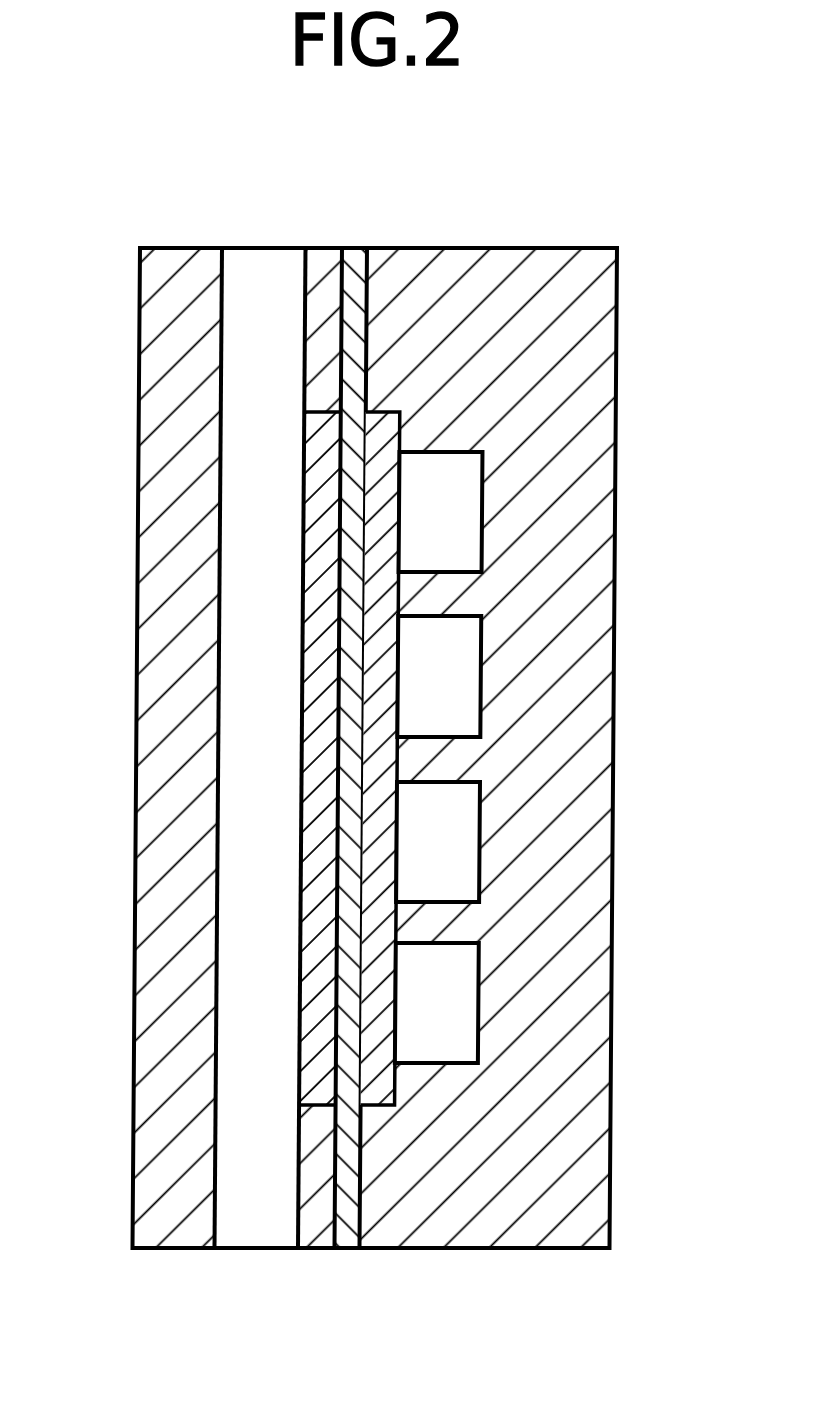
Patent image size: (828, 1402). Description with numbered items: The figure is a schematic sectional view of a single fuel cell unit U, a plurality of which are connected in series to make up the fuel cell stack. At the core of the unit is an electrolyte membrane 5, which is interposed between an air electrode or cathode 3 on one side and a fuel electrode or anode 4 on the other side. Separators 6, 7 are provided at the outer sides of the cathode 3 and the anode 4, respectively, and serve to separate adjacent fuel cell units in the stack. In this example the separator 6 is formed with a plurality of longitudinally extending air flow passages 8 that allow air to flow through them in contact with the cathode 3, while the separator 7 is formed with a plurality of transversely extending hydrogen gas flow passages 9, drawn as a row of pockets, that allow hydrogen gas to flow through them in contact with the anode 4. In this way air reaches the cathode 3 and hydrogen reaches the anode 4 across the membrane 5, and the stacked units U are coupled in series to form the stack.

The single fuel cell unit U is at (607, 207).
The cathode 3 is at (304, 848).
The anode 4 is at (385, 1106).
The electrolyte membrane 5 is at (351, 1243).
The separator 6 is at (182, 248).
The separator 7 is at (505, 247).
The air flow passages 8 is at (264, 553).
The hydrogen gas flow passages 9 is at (486, 510).